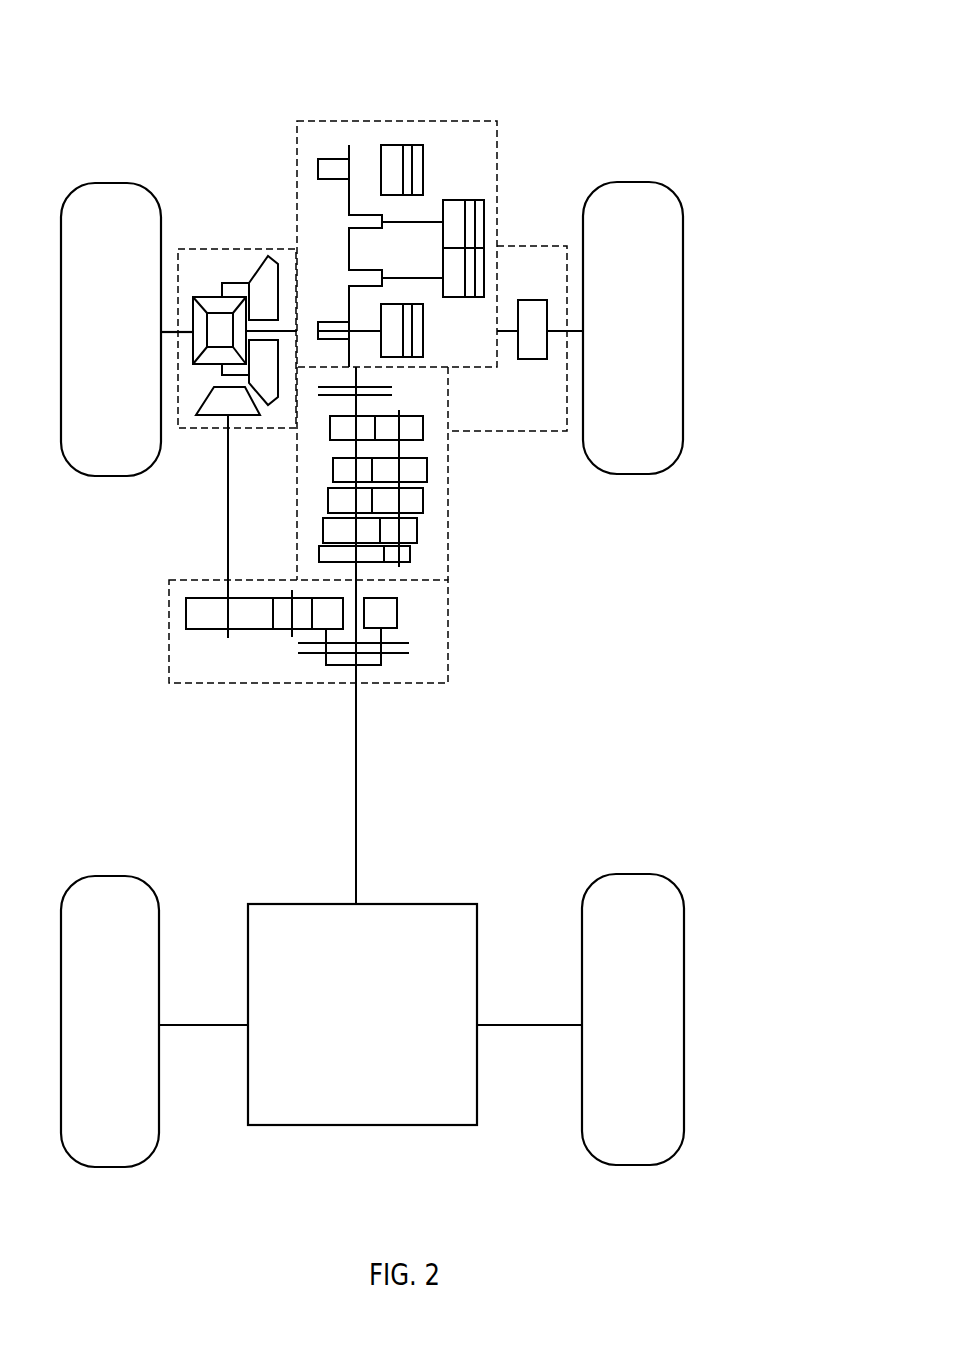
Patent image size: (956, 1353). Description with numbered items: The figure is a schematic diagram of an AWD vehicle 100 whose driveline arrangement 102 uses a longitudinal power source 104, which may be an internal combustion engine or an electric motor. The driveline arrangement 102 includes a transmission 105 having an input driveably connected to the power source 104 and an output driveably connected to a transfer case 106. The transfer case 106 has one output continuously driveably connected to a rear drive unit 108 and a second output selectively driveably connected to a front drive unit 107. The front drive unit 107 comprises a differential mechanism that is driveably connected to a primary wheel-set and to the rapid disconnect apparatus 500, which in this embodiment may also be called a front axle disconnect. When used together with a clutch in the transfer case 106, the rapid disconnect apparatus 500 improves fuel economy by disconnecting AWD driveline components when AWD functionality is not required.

The AWD vehicle 100 is at (507, 99).
The driveline arrangement 102 is at (389, 468).
The power source 104 is at (452, 137).
The transmission 105 is at (435, 556).
The transfer case 106 is at (435, 613).
The front drive unit 107 is at (222, 260).
The rear drive unit 108 is at (316, 1126).
The rapid disconnect apparatus 500 is at (544, 267).